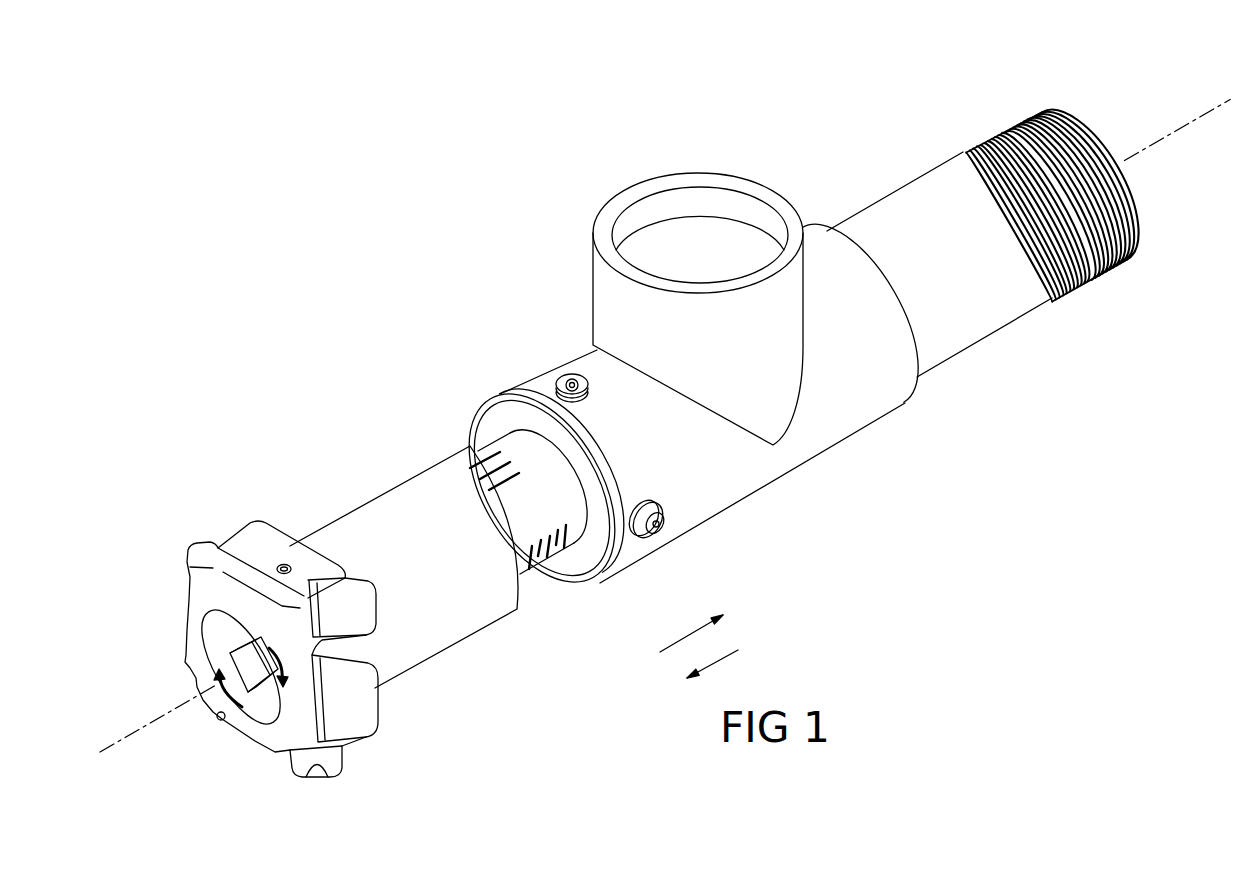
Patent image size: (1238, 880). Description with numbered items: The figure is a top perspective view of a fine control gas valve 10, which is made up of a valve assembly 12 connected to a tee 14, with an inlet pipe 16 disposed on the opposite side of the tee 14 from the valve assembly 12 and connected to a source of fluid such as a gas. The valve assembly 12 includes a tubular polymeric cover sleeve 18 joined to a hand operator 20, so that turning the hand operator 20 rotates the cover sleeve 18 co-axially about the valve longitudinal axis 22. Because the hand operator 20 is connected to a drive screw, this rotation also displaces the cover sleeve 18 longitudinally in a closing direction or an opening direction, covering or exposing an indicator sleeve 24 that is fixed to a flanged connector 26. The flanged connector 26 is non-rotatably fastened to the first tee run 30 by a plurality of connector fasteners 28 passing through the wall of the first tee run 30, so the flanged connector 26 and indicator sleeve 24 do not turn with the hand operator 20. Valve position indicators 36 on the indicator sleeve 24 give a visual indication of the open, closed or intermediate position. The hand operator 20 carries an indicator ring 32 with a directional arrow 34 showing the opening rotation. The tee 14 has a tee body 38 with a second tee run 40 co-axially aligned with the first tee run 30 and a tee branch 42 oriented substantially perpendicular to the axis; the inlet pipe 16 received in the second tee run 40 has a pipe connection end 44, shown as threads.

The fine control gas valve 10 is at (776, 106).
The valve assembly 12 is at (355, 466).
The tee 14 is at (568, 260).
The inlet pipe 16 is at (990, 313).
The cover sleeve 18 is at (457, 633).
The hand operator 20 is at (303, 742).
The valve longitudinal axis 22 is at (137, 731).
The indicator sleeve 24 is at (518, 497).
The flanged connector 26 is at (588, 575).
The connector fasteners 28 is at (570, 373).
The first tee run 30 is at (597, 350).
The indicator ring 32 is at (240, 713).
The directional arrow 34 is at (228, 647).
The valve position indicators 36 is at (566, 572).
The tee body 38 is at (803, 450).
The second tee run 40 is at (822, 253).
The tee branch 42 is at (717, 197).
The pipe connection end 44 is at (1102, 273).